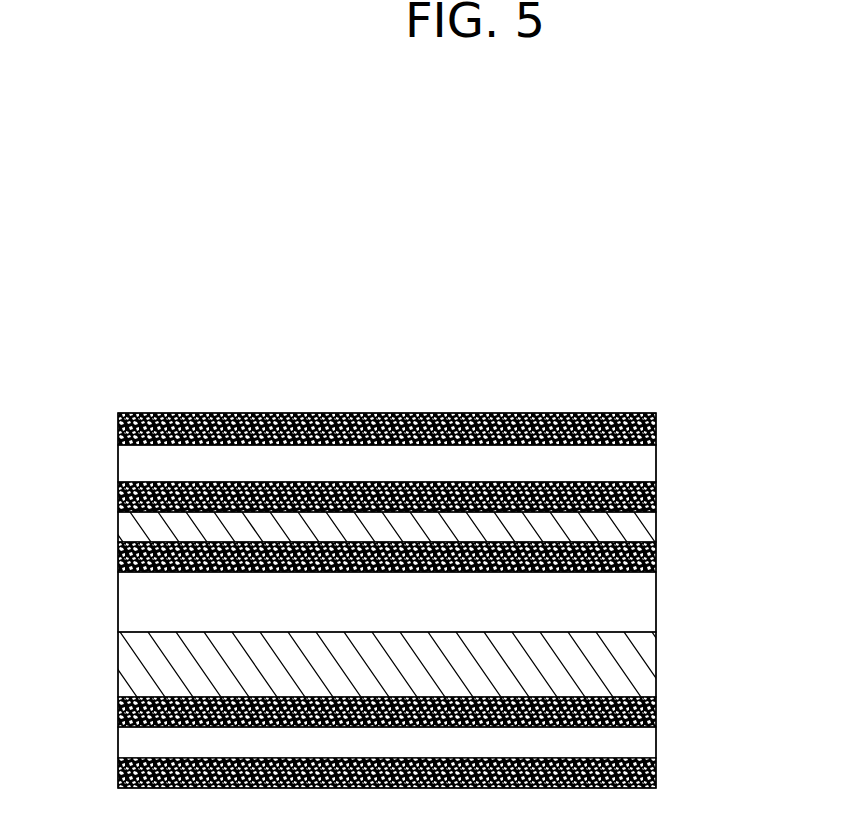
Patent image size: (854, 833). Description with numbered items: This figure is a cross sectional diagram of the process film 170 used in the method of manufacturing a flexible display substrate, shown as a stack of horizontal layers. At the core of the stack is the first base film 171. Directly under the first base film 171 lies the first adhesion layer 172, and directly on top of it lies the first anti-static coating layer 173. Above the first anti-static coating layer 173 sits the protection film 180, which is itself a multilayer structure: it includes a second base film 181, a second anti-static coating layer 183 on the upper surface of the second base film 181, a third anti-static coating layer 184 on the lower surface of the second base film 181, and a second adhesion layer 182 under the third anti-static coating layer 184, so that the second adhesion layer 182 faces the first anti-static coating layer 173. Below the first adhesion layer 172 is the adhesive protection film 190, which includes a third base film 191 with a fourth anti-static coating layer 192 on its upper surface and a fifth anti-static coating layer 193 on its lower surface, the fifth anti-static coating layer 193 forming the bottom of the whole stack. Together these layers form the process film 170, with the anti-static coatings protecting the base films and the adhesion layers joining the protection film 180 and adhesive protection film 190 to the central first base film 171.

The process film 170 is at (134, 354).
The first base film 171 is at (643, 602).
The first adhesion layer 172 is at (643, 668).
The first anti-static coating layer 173 is at (657, 558).
The protection film 180 is at (447, 473).
The second base film 181 is at (643, 464).
The second adhesion layer 182 is at (417, 526).
The second anti-static coating layer 183 is at (657, 428).
The third anti-static coating layer 184 is at (657, 497).
The adhesive protection film 190 is at (455, 742).
The third base film 191 is at (643, 744).
The fourth anti-static coating layer 192 is at (657, 713).
The fifth anti-static coating layer 193 is at (425, 773).